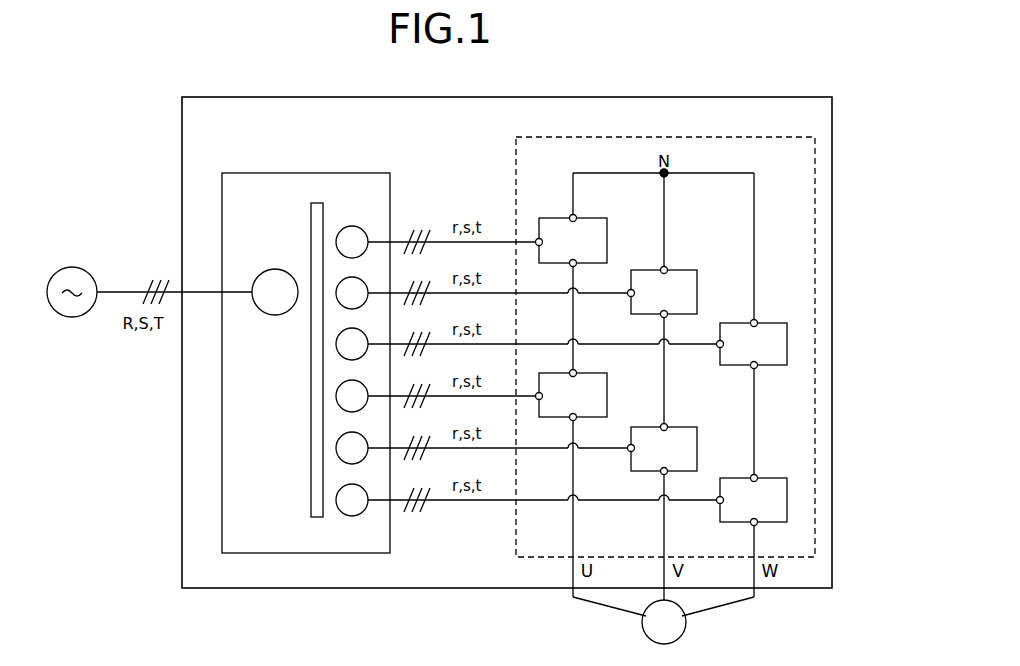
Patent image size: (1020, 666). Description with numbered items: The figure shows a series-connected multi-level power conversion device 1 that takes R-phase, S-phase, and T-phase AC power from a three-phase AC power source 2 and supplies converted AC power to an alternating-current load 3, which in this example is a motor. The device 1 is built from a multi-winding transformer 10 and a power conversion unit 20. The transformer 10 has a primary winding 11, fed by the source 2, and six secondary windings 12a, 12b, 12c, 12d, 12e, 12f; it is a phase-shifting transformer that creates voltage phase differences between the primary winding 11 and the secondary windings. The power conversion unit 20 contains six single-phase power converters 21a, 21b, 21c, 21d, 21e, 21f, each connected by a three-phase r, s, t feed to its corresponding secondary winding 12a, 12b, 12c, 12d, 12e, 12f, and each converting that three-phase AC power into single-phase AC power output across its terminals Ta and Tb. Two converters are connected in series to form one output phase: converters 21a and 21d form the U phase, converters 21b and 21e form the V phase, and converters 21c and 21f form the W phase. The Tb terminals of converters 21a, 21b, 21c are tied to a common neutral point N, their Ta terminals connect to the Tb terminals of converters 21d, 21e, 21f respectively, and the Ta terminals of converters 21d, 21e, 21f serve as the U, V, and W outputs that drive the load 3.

The series-connected multi-level power conversion device 1 is at (458, 97).
The three-phase AC power source 2 is at (77, 268).
The alternating-current load 3 is at (647, 638).
The multi-winding transformer 10 is at (296, 173).
The primary winding 11 is at (262, 276).
The secondary winding 12a is at (340, 234).
The secondary winding 12b is at (340, 275).
The secondary winding 12c is at (339, 335).
The secondary winding 12d is at (339, 388).
The secondary winding 12e is at (339, 439).
The secondary winding 12f is at (339, 491).
The power conversion unit 20 is at (666, 138).
The single-phase power converter 21a is at (603, 222).
The single-phase power converter 21b is at (692, 274).
The single-phase power converter 21c is at (782, 327).
The single-phase power converter 21d is at (614, 392).
The single-phase power converter 21e is at (684, 429).
The single-phase power converter 21f is at (774, 481).